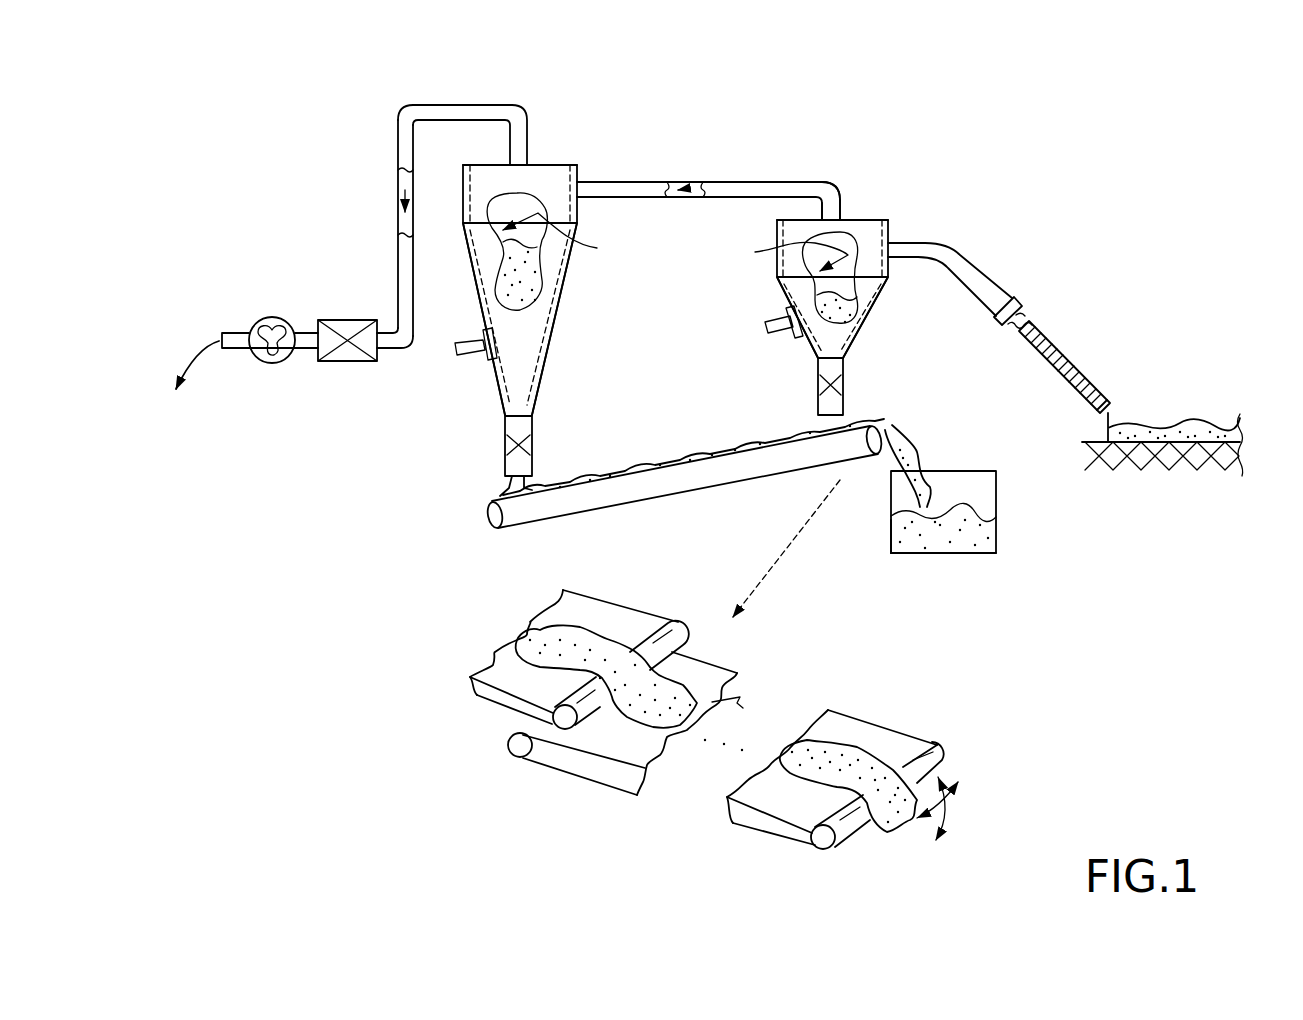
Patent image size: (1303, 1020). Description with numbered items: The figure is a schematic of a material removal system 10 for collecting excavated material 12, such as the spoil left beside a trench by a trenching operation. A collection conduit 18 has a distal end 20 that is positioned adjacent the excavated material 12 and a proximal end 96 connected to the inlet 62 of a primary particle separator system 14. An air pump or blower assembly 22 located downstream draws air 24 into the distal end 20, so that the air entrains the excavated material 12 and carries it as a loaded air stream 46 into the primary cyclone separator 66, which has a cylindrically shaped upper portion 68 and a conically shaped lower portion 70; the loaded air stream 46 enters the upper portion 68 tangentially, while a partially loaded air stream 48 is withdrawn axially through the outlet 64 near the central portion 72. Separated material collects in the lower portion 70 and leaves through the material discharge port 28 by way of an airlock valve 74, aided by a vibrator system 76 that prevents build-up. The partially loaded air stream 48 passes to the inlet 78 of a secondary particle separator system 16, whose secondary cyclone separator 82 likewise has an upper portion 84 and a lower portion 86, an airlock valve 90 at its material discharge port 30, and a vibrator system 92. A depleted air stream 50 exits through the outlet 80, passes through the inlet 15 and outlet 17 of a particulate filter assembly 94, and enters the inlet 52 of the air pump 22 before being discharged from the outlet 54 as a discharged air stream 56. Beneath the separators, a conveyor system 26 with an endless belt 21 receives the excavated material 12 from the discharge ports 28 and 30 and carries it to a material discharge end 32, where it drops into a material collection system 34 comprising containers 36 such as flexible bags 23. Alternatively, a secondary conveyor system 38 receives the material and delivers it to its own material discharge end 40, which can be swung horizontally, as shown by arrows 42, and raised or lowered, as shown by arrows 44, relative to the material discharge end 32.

The material removal system 10 is at (297, 103).
The excavated material 12 is at (538, 280).
The primary particle separator system 14 is at (829, 275).
The inlet of particulate filter assembly 15 is at (388, 350).
The secondary particle separator system 16 is at (521, 263).
The outlet of particulate filter assembly 17 is at (311, 332).
The collection conduit 18 is at (1072, 351).
The distal end 20 is at (1098, 406).
The endless belt 21 is at (716, 494).
The air pump or blower assembly 22 is at (271, 314).
The flexible bags 23 is at (892, 538).
The air 24 is at (1135, 404).
The conveyor system 26 is at (486, 531).
The material discharge port 28 is at (845, 376).
The material discharge port 30 is at (533, 422).
The material discharge end 32 is at (672, 622).
The material collection system 34 is at (1003, 497).
The container 36 is at (998, 539).
The secondary conveyor system 38 is at (569, 779).
The material discharge end 40 is at (938, 743).
The arrows 42 is at (950, 803).
The arrows 44 is at (943, 818).
The loaded air stream 46 is at (787, 255).
The partially-loaded air stream 48 is at (690, 188).
The depleted air stream 50 is at (405, 190).
The inlet 52 is at (303, 349).
The outlet 54 is at (220, 333).
The discharged air stream 56 is at (219, 341).
The inlet 62 is at (905, 257).
The outlet 64 is at (840, 200).
The primary cyclone separator 66 is at (778, 286).
The upper portion 68 is at (775, 235).
The lower portion 70 is at (860, 323).
The central portion 72 is at (855, 218).
The airlock valve 74 is at (818, 385).
The vibrator system 76 is at (768, 334).
The inlet 78 is at (593, 199).
The outlet 80 is at (527, 142).
The secondary cyclone separator 82 is at (474, 262).
The upper portion 84 is at (482, 163).
The lower portion 86 is at (556, 314).
The airlock valve 90 is at (504, 445).
The vibrator system 92 is at (456, 350).
The particulate filter assembly 94 is at (345, 318).
The proximal end 96 is at (1023, 314).